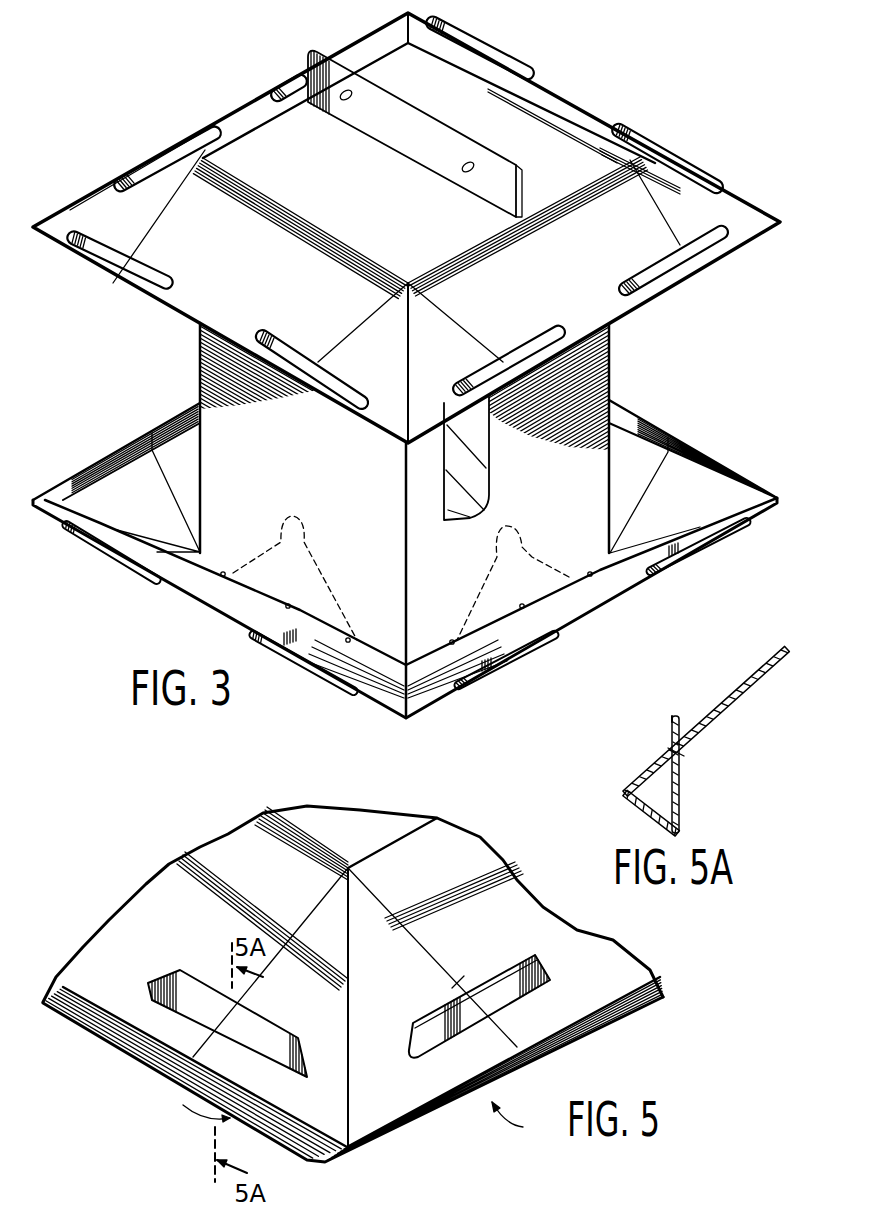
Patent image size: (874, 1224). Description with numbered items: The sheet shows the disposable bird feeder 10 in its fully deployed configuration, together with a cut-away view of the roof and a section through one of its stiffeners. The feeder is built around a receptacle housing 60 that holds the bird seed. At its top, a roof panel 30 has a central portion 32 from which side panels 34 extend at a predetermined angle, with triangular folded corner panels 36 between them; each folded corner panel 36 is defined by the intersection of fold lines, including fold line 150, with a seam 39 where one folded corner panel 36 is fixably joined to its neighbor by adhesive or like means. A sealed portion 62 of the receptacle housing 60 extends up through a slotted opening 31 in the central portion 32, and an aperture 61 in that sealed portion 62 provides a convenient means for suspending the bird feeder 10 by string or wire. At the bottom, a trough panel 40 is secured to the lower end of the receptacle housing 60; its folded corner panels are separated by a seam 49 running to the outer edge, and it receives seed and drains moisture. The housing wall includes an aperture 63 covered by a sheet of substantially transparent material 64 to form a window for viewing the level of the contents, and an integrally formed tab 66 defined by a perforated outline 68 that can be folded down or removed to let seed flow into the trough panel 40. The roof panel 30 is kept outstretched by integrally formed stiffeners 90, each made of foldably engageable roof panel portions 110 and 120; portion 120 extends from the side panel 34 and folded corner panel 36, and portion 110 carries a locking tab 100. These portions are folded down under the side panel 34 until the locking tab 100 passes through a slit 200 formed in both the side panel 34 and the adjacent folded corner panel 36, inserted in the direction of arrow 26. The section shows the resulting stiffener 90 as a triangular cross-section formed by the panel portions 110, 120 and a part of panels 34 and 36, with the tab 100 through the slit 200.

In FIG. 3, the disposable bird feeder 10 is at (689, 398).
In FIG. 3, the roof panel 30 is at (422, 228).
In FIG. 5, the roof panel 30 is at (364, 984).
In FIG. 3, the slotted opening 31 is at (307, 102).
In FIG. 3, the central portion 32 is at (333, 216).
In FIG. 5, the central portion 32 is at (351, 843).
In FIG. 5, the side panel 34 is at (164, 923).
In FIG. 5A, the side panel 34 is at (748, 680).
In FIG. 5, the folded corner panel 36 is at (278, 988).
In FIG. 3, the seam 39 is at (72, 208).
In FIG. 5, the seam 39 is at (350, 905).
In FIG. 3, the trough panel 40 is at (416, 570).
In FIG. 3, the seam 49 is at (135, 532).
In FIG. 3, the receptacle housing 60 is at (430, 520).
In FIG. 3, the aperture 61 is at (353, 94).
In FIG. 3, the sealed portion 62 is at (394, 134).
In FIG. 3, the aperture 63 is at (486, 458).
In FIG. 3, the sheet of substantially transparent material 64 is at (450, 465).
In FIG. 3, the tab 66 is at (271, 585).
In FIG. 3, the perforated outline 68 is at (338, 605).
In FIG. 3, the stiffener 90 is at (722, 460).
In FIG. 5A, the stiffener 90 is at (680, 727).
In FIG. 5, the locking tab 100 is at (180, 968).
In FIG. 5A, the locking tab 100 is at (680, 723).
In FIG. 5A, the roof panel portion 110 is at (680, 790).
In FIG. 5A, the roof panel portion 120 is at (642, 805).
In FIG. 5, the fold line 150 is at (300, 912).
In FIG. 5A, the slit 200 is at (670, 752).
In FIG. 5, the direction arrow 26 is at (263, 987).